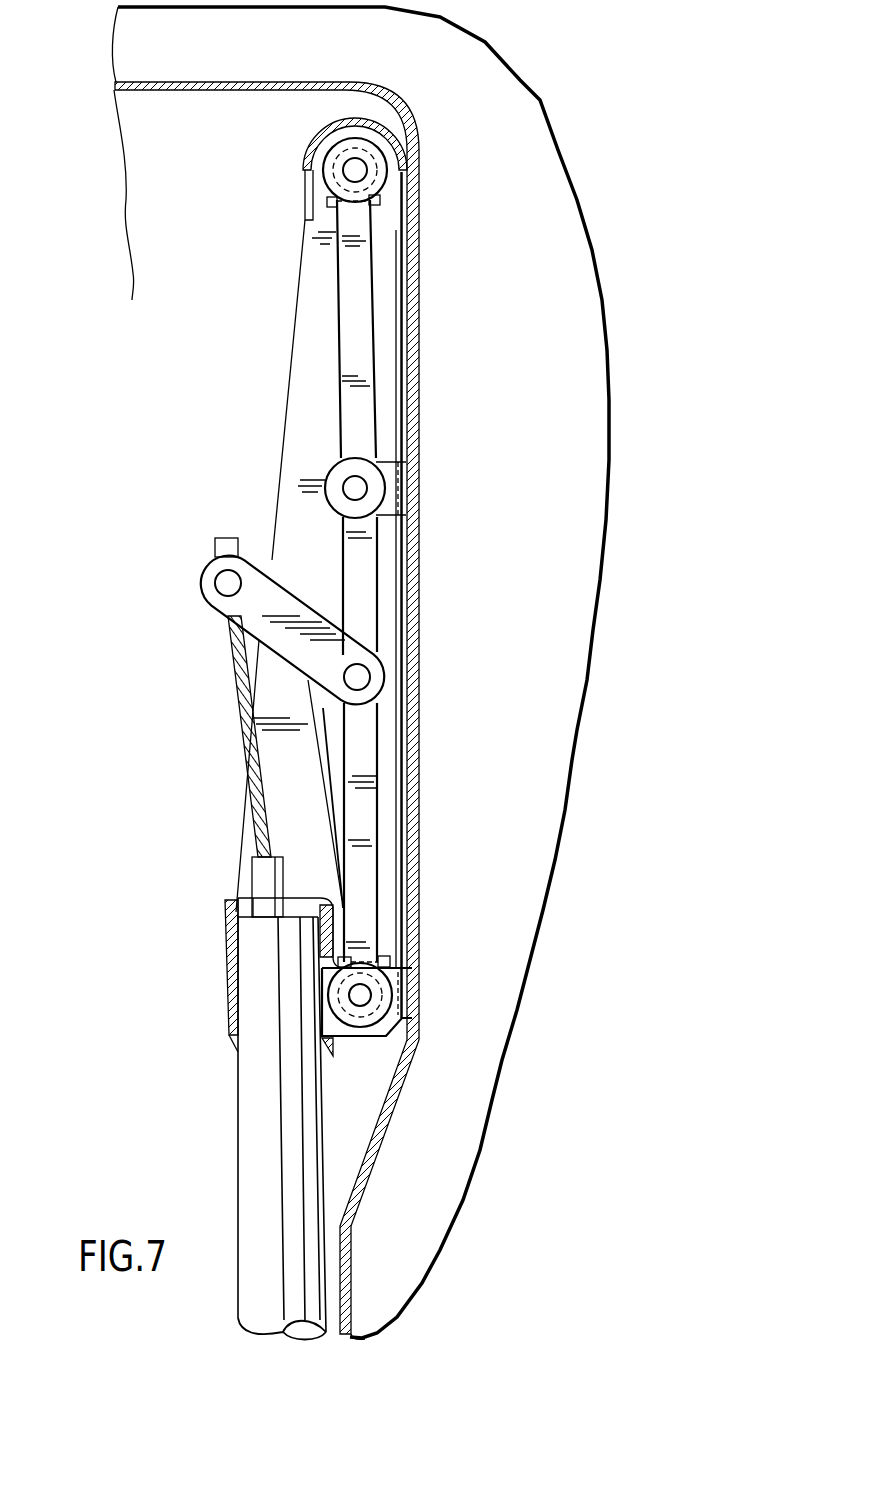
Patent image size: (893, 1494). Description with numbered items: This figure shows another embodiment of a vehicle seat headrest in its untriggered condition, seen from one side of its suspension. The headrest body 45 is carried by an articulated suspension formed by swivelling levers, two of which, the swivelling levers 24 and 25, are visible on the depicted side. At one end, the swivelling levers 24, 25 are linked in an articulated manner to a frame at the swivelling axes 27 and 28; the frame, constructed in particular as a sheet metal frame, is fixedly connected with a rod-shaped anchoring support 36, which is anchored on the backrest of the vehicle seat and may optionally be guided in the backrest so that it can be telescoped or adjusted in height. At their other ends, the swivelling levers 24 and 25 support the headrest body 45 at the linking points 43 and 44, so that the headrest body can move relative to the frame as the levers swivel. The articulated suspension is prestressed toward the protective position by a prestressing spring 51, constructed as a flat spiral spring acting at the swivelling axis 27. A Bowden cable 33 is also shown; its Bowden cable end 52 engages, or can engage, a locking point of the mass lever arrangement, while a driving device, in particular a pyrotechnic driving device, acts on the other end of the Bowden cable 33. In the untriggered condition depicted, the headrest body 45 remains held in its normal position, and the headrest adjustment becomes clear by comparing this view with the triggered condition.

The headrest body 45 is at (128, 50).
The swivelling axis 27 is at (352, 166).
The prestressing spring 51 is at (330, 206).
The swivelling lever 24 is at (350, 325).
The linking point 43 is at (350, 485).
The Bowden cable end 52 is at (218, 548).
The swivelling axis 28 is at (357, 675).
The Bowden cable 33 is at (240, 695).
The swivelling lever 25 is at (350, 780).
The linking point 44 is at (386, 1028).
The anchoring support 36 is at (250, 1130).